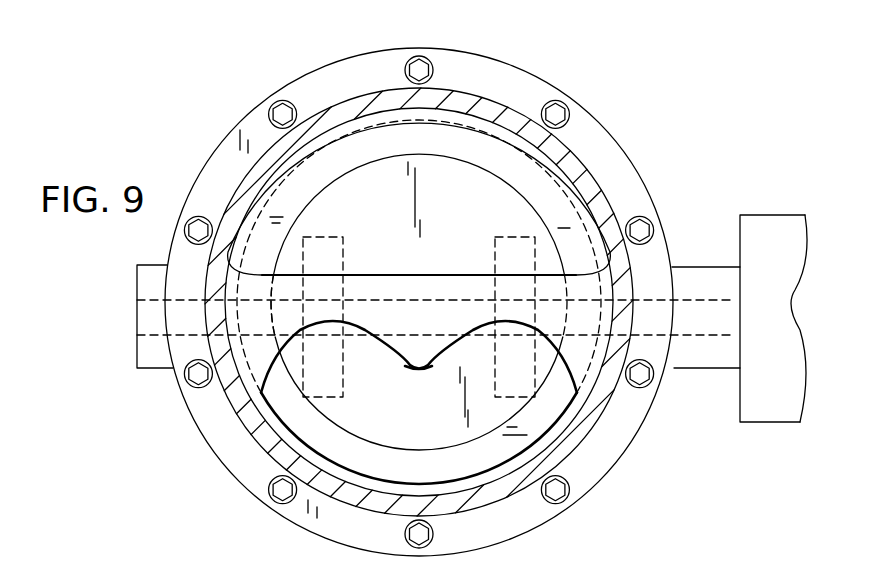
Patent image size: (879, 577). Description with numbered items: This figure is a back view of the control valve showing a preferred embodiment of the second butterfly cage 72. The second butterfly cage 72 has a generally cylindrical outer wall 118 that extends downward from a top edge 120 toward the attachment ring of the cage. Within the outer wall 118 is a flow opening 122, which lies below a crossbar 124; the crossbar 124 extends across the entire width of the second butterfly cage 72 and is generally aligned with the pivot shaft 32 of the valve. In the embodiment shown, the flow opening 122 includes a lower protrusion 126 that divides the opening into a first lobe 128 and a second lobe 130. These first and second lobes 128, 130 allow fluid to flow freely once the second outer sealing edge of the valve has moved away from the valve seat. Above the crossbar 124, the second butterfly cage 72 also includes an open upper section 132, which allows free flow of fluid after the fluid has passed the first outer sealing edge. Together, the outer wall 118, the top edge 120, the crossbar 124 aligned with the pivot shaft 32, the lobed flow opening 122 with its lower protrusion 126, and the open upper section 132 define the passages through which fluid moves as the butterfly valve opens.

The pivot shaft 32 is at (690, 280).
The second butterfly cage 72 is at (419, 152).
The outer wall 118 is at (225, 387).
The top edge 120 is at (385, 276).
The flow opening 122 is at (353, 325).
The crossbar 124 is at (455, 302).
The lower protrusion 126 is at (418, 356).
The first lobe 128 is at (292, 352).
The second lobe 130 is at (459, 302).
The open upper section 132 is at (385, 170).